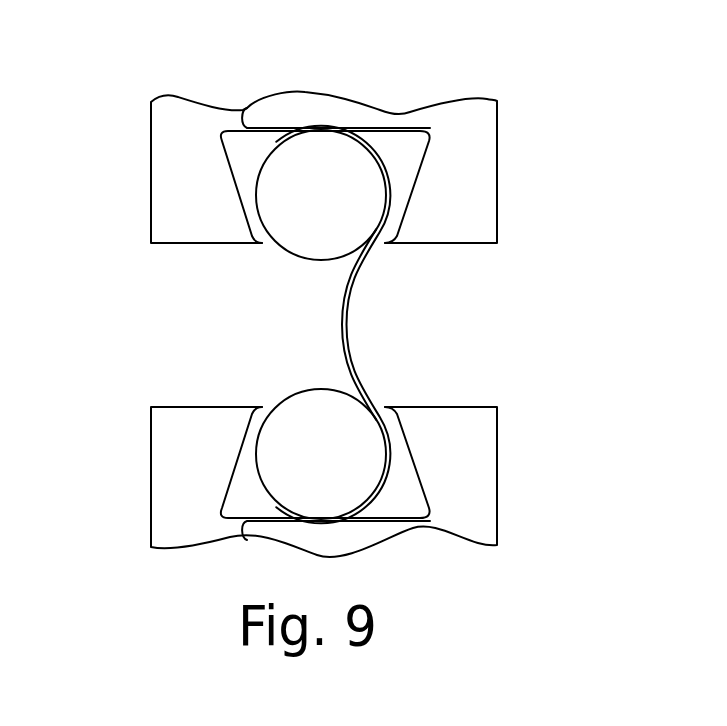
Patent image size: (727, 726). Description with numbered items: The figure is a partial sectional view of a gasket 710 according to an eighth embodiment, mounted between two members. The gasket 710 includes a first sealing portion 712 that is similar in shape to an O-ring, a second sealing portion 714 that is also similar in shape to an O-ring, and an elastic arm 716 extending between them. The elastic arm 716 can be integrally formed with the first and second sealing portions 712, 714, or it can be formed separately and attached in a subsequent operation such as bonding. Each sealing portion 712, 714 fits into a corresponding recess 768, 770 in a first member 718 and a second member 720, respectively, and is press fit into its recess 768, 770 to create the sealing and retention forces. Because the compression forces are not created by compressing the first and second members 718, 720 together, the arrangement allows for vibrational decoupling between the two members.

The gasket 710 is at (230, 288).
The first sealing portion 712 is at (383, 258).
The second sealing portion 714 is at (398, 393).
The elastic arm 716 is at (340, 319).
The first member 718 is at (497, 174).
The second member 720 is at (495, 487).
The recess 768 is at (247, 104).
The recess 770 is at (227, 496).